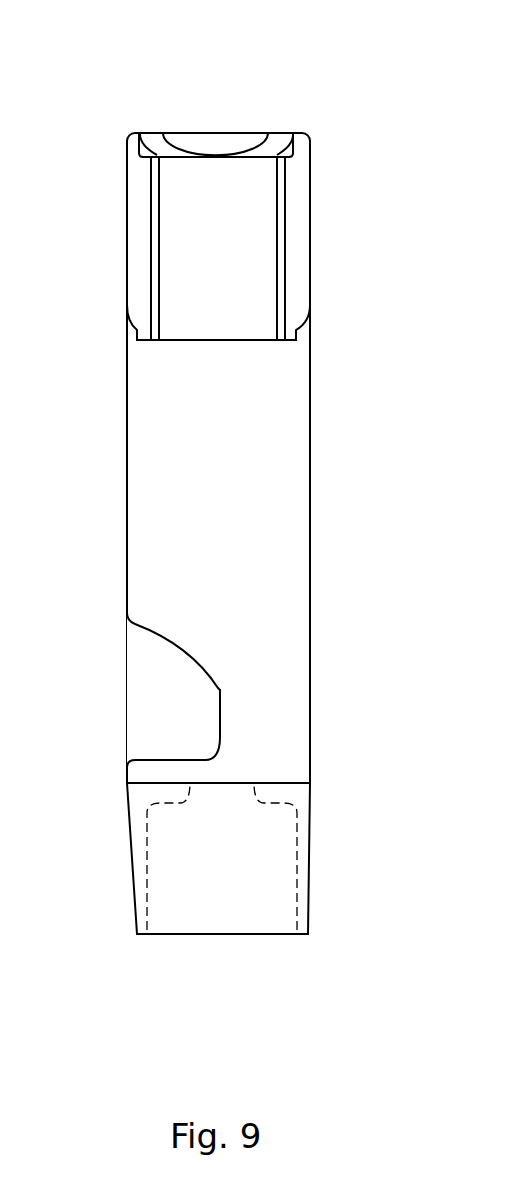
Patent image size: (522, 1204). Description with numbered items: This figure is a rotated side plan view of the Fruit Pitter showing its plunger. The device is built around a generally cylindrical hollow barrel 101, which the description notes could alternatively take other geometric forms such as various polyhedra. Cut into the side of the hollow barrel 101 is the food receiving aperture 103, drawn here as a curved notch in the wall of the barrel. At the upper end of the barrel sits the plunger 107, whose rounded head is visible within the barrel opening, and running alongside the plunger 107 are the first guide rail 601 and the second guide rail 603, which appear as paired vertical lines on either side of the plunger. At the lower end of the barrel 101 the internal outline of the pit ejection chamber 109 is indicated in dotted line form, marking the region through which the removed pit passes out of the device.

The generally cylindrical hollow barrel 101 is at (273, 413).
The food receiving aperture 103 is at (148, 653).
The plunger 107 is at (153, 140).
The pit ejection chamber 109 is at (313, 833).
The first guide rail 601 is at (295, 172).
The second guide rail 603 is at (137, 175).